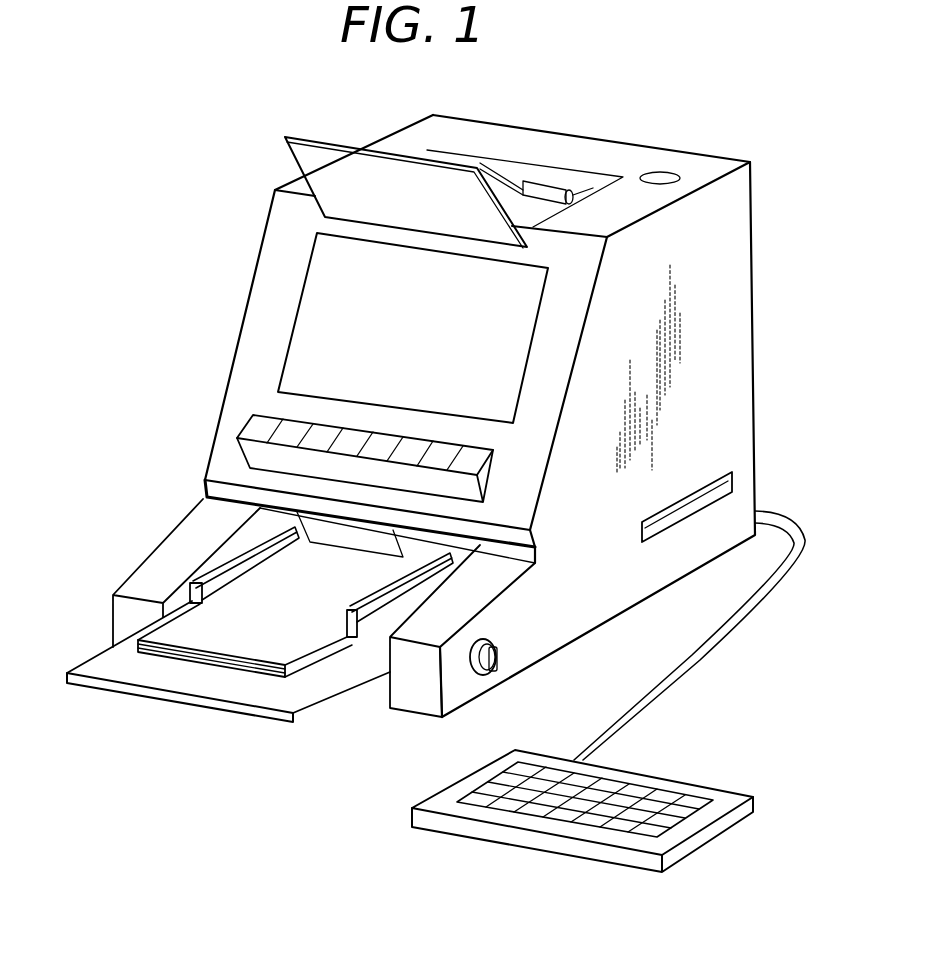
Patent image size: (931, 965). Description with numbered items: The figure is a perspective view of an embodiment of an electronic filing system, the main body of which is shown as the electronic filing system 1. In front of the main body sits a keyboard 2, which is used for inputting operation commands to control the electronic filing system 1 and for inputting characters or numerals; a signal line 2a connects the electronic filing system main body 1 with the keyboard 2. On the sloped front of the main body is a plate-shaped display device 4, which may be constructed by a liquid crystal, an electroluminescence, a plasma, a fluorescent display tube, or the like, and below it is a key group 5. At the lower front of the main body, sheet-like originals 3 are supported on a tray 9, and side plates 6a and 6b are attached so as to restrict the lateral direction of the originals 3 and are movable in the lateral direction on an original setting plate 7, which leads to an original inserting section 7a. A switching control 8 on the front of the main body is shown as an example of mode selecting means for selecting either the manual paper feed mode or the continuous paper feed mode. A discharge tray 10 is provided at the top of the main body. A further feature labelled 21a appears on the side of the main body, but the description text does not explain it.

The electronic filing system main body 1 is at (753, 282).
The keyboard 2 is at (708, 833).
The signal line 2a is at (750, 626).
The sheet-like originals 3 is at (160, 655).
The plate-shaped display device 4 is at (297, 302).
The key group 5 is at (237, 436).
The side plate 6a is at (218, 567).
The side plate 6b is at (358, 640).
The original setting plate 7 is at (382, 640).
The original inserting section 7a is at (415, 555).
The switching control 8 is at (500, 657).
The tray 9 is at (173, 697).
The discharge tray 10 is at (327, 140).
The side slot 21a is at (732, 478).